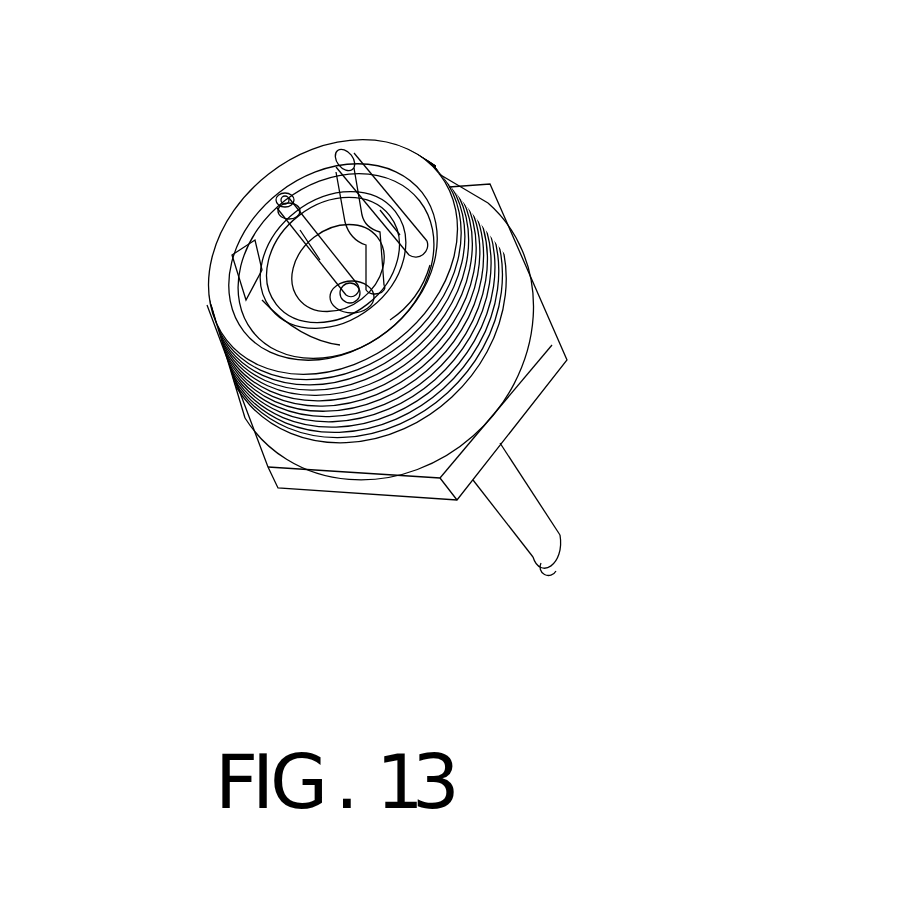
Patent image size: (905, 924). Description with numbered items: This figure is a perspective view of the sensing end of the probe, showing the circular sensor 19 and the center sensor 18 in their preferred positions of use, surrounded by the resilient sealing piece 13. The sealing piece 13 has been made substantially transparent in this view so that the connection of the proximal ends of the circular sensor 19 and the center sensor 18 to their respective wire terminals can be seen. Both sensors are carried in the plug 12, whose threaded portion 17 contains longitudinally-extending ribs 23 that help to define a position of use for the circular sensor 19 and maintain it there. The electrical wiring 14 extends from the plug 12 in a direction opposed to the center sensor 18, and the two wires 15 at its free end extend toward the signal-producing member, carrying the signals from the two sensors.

The plug 12 is at (600, 384).
The resilient sealing piece 13 is at (282, 270).
The electrical wiring 14 is at (563, 532).
The wires 15 is at (579, 594).
The threaded portion 17 is at (504, 280).
The center sensor 18 is at (262, 177).
The circular sensor 19 is at (444, 194).
The longitudinally-extending ribs 23 is at (363, 137).